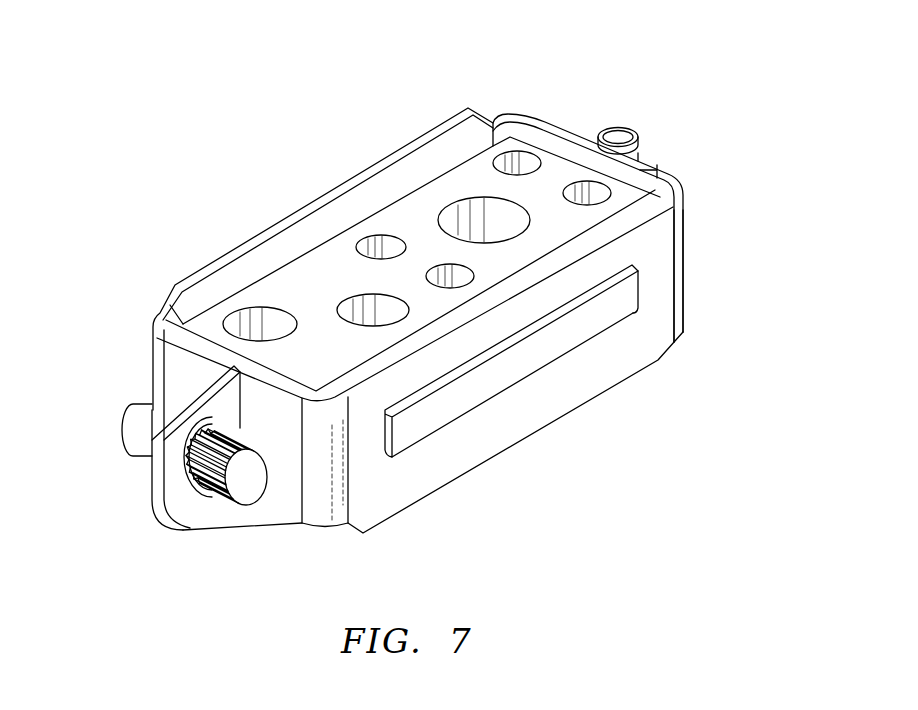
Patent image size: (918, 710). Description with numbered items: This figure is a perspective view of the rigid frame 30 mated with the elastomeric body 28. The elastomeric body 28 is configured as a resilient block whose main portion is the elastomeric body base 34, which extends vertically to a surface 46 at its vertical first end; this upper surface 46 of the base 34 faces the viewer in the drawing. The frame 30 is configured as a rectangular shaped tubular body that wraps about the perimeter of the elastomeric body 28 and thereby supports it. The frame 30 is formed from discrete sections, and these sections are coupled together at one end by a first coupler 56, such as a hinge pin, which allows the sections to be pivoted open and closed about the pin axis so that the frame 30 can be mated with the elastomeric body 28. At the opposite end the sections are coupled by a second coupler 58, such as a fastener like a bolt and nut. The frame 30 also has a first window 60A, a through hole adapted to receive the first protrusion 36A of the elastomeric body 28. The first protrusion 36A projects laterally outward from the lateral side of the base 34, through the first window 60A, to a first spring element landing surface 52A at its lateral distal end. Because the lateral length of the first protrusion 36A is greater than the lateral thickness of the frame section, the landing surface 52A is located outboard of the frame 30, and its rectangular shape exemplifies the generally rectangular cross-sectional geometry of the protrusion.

The elastomeric body 28 is at (275, 295).
The frame 30 is at (516, 110).
The elastomeric body base 34 is at (385, 219).
The surface 46 is at (330, 263).
The first coupler 56 is at (618, 132).
The second coupler 58 is at (140, 469).
The first spring element landing surface 52A is at (457, 400).
The first protrusion 36A is at (415, 430).
The first window 60A is at (622, 267).